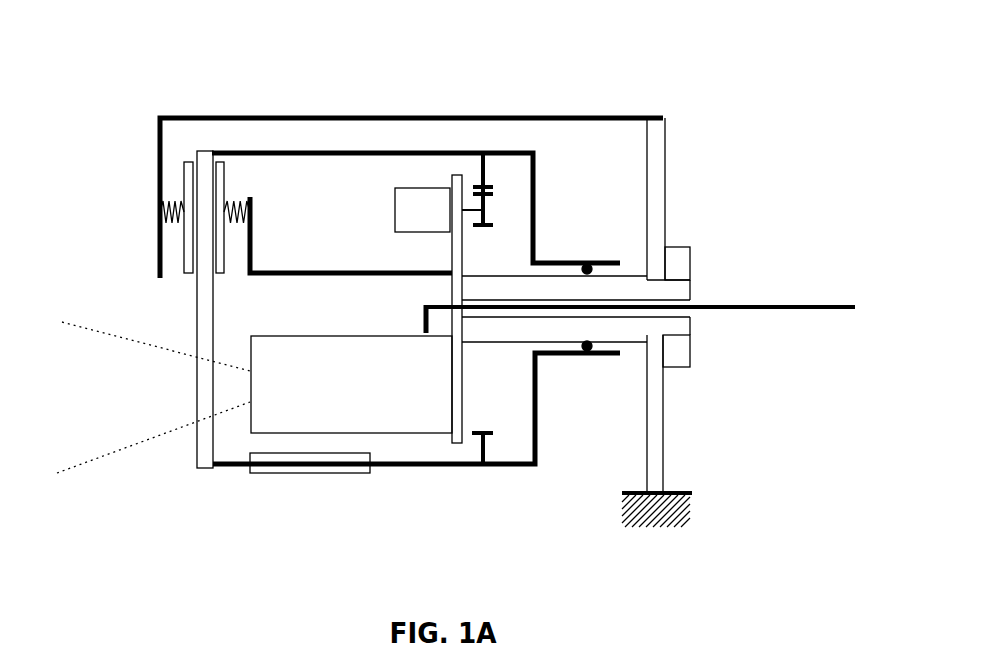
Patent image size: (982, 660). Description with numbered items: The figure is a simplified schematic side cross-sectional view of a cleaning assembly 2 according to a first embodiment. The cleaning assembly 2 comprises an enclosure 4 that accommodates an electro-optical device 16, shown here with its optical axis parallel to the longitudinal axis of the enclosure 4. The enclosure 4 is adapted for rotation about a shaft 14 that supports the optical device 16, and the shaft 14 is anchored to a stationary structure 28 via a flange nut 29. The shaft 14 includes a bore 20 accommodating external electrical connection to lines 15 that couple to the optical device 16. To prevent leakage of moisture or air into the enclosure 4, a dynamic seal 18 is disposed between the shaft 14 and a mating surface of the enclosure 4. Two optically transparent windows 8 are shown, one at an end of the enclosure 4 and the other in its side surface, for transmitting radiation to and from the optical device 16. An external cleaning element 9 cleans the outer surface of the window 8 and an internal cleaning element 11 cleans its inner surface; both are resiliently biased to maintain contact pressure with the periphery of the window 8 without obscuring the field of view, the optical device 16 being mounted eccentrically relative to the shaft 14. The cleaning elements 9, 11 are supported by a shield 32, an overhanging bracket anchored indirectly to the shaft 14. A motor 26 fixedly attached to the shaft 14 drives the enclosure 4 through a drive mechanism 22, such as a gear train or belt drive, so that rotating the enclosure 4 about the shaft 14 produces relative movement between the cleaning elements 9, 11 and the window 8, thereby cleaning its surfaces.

The cleaning assembly 2 is at (566, 72).
The enclosure 4 is at (442, 468).
The optically transparent window 8 is at (205, 303).
The external cleaning element 9 is at (188, 190).
The internal cleaning element 11 is at (220, 177).
The shaft 14 is at (633, 287).
The lines 15 is at (764, 303).
The electro-optical device 16 is at (355, 360).
The dynamic seal 18 is at (587, 351).
The bore 20 is at (675, 302).
The drive mechanism 22 is at (485, 445).
The motor 26 is at (418, 218).
The stationary structure 28 is at (653, 232).
The flange nut 29 is at (673, 352).
The shield 32 is at (251, 116).